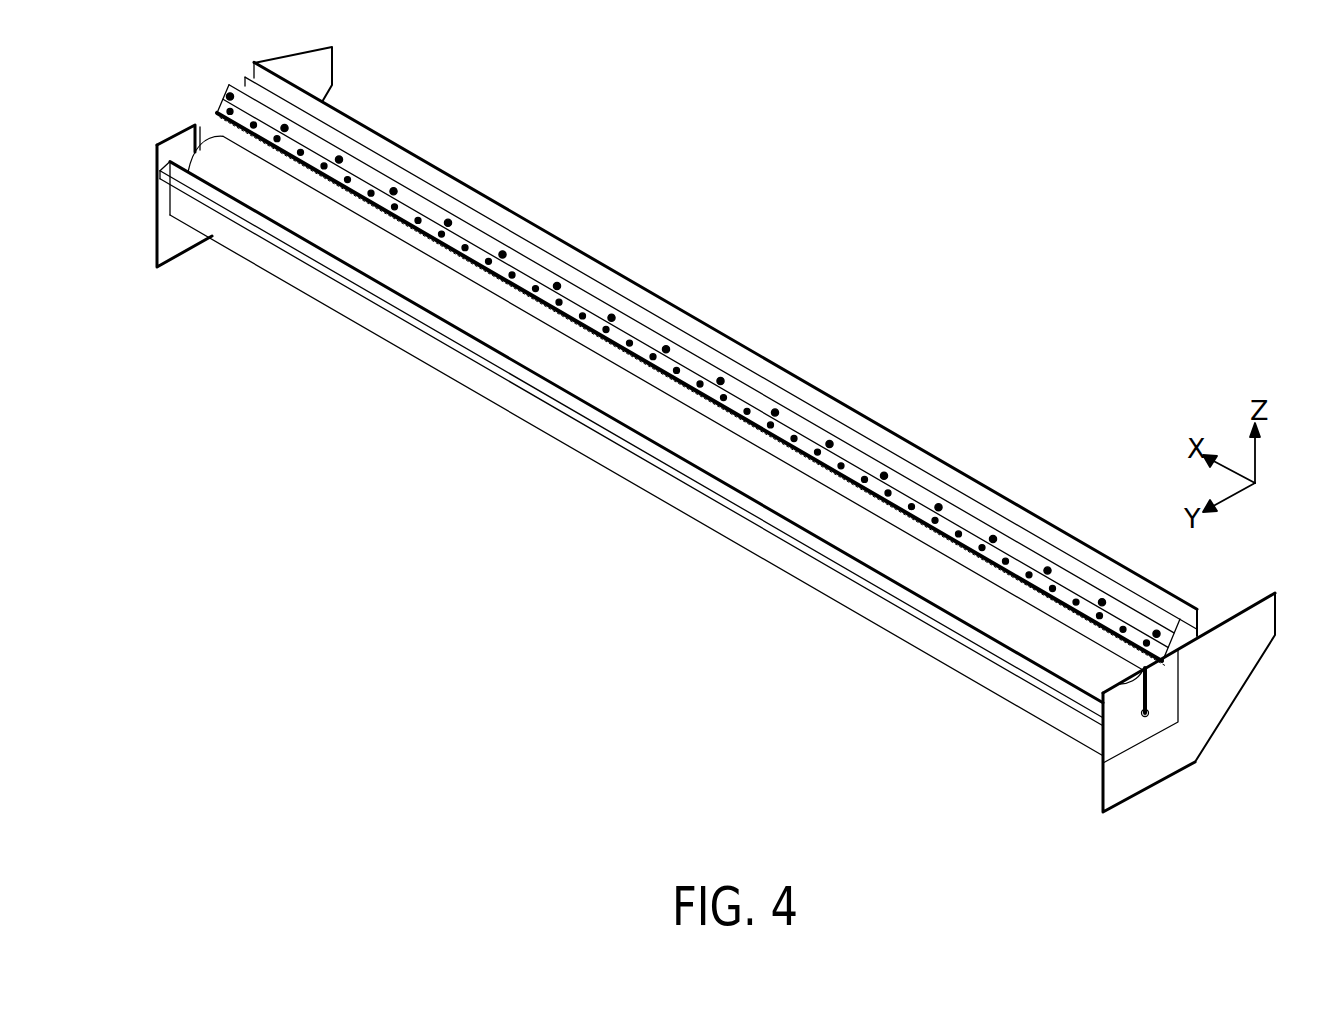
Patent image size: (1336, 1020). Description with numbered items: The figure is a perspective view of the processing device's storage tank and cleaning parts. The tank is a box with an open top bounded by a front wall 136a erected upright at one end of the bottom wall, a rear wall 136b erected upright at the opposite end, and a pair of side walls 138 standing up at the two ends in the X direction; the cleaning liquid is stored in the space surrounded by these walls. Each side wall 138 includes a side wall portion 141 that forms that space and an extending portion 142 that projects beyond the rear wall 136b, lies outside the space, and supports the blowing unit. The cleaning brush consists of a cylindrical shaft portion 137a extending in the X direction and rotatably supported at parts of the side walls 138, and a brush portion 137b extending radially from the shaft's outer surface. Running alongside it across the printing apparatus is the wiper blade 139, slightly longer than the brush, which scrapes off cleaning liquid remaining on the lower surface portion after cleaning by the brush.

The front wall 136a is at (840, 587).
The rear wall 136b is at (903, 433).
The shaft portion 137a is at (1152, 716).
The brush portion 137b is at (940, 585).
The side walls 138 is at (1230, 695).
The wiper blade 139 is at (987, 513).
The side wall portion 141 is at (1170, 695).
The extending portion 142 is at (1265, 633).